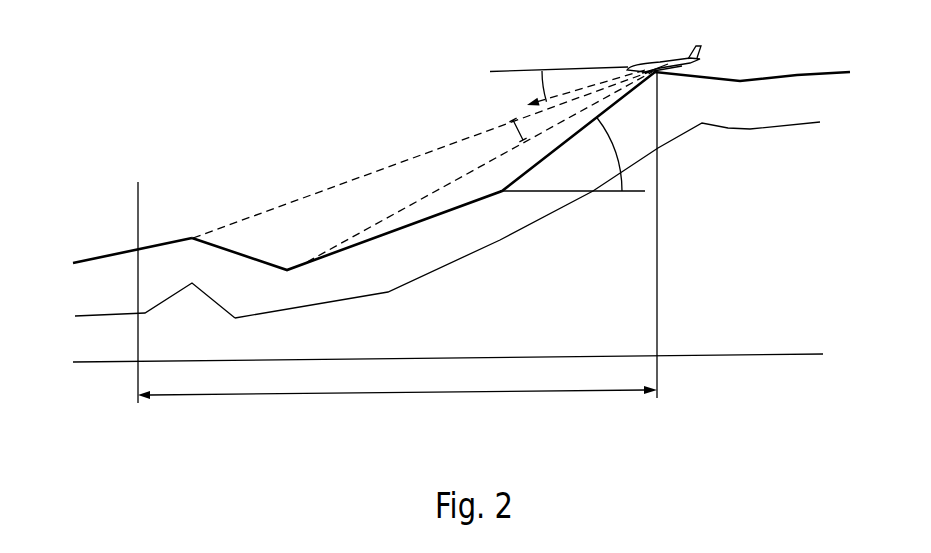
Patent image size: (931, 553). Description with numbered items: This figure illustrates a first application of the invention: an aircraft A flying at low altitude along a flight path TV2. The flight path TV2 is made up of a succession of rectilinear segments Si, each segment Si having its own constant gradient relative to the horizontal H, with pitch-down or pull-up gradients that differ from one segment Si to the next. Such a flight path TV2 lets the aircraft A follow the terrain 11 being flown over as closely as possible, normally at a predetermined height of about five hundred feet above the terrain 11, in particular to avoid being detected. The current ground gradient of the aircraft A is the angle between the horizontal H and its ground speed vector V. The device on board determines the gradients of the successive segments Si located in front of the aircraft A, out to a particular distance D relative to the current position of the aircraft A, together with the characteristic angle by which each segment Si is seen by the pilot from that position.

The terrain 11 is at (725, 128).
The flight path TV2 is at (108, 232).
The rectilinear segment Si is at (170, 240).
The aircraft A is at (657, 62).
The horizontal H is at (530, 71).
The ground speed vector V is at (571, 90).
The distance D is at (397, 250).